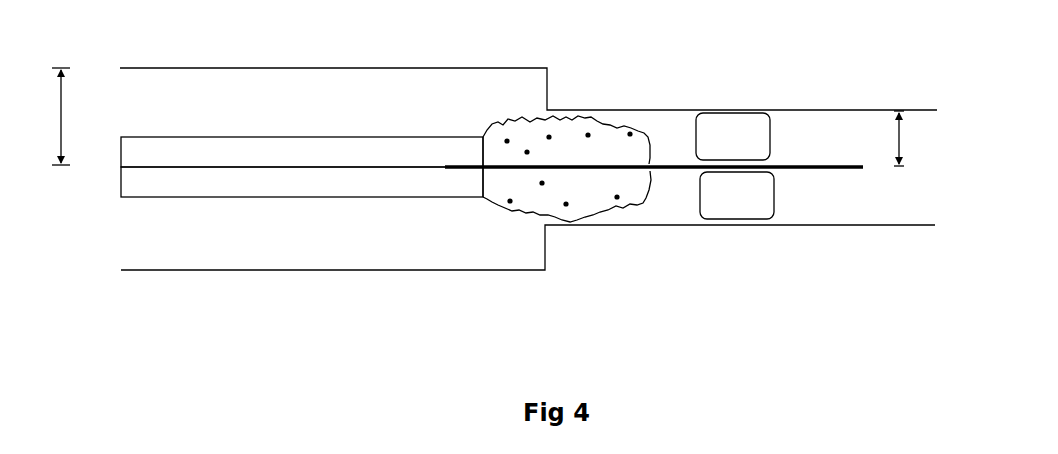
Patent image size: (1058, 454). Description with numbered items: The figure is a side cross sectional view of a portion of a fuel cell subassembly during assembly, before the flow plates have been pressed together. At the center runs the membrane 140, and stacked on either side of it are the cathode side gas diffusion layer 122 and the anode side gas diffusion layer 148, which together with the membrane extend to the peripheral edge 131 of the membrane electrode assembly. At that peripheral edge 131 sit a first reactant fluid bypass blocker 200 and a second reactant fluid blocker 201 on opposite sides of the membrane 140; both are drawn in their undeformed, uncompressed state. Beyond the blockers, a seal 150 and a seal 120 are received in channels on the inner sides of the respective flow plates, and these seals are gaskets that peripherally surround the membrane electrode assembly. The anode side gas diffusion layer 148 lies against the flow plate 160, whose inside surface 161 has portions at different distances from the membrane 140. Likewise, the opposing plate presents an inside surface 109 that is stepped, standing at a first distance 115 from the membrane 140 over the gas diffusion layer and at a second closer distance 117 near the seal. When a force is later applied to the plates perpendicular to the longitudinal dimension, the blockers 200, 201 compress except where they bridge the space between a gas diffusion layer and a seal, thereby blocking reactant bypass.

The inside surface of flow plate 109 is at (145, 65).
The first distance 115 is at (64, 116).
The second closer distance 117 is at (922, 138).
The seal 120 is at (744, 227).
The cathode side gas diffusion layer 122 is at (371, 190).
The peripheral edge of MEA 131 is at (478, 133).
The membrane 140 is at (871, 170).
The anode side gas diffusion layer 148 is at (371, 149).
The seal 150 is at (743, 108).
The flow plate 160 is at (400, 246).
The inside surface of flow plate 161 is at (164, 273).
The first reactant fluid bypass blocker 200 is at (558, 130).
The second reactant fluid blocker 201 is at (581, 224).